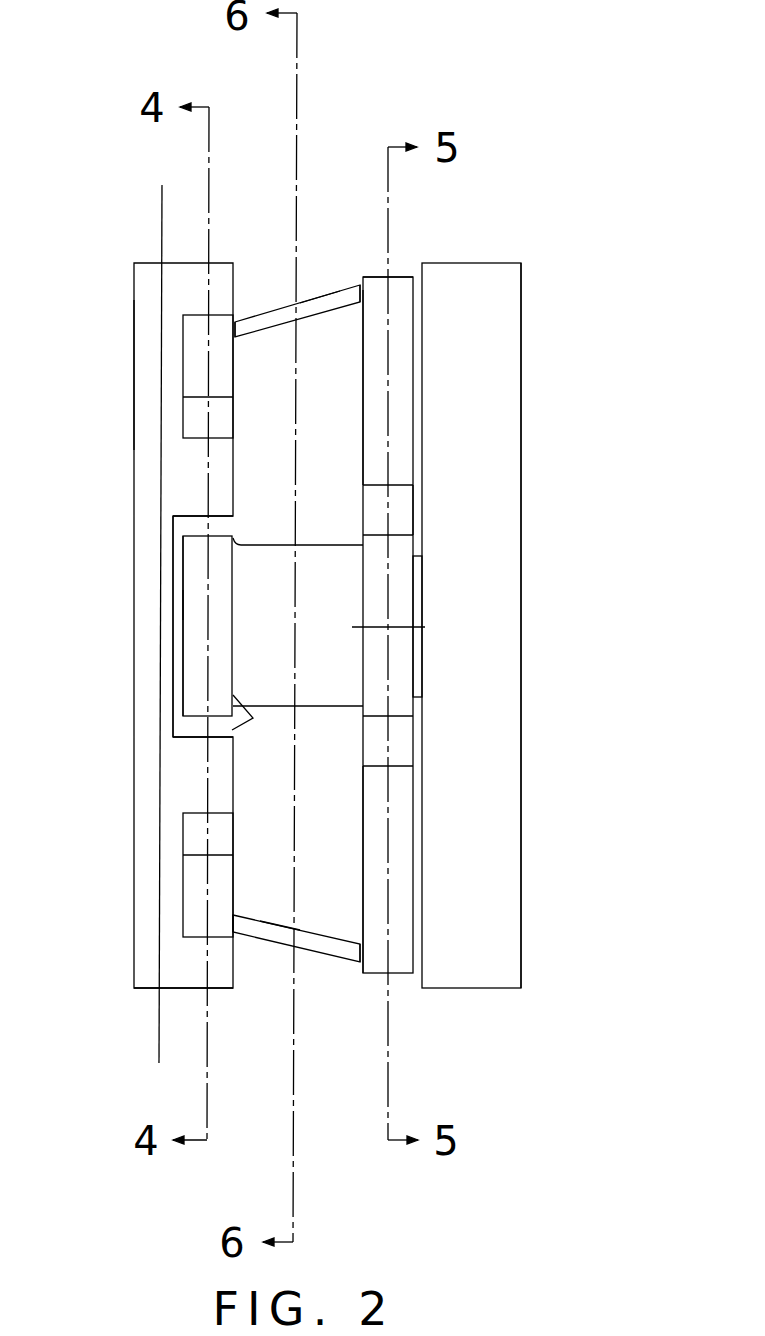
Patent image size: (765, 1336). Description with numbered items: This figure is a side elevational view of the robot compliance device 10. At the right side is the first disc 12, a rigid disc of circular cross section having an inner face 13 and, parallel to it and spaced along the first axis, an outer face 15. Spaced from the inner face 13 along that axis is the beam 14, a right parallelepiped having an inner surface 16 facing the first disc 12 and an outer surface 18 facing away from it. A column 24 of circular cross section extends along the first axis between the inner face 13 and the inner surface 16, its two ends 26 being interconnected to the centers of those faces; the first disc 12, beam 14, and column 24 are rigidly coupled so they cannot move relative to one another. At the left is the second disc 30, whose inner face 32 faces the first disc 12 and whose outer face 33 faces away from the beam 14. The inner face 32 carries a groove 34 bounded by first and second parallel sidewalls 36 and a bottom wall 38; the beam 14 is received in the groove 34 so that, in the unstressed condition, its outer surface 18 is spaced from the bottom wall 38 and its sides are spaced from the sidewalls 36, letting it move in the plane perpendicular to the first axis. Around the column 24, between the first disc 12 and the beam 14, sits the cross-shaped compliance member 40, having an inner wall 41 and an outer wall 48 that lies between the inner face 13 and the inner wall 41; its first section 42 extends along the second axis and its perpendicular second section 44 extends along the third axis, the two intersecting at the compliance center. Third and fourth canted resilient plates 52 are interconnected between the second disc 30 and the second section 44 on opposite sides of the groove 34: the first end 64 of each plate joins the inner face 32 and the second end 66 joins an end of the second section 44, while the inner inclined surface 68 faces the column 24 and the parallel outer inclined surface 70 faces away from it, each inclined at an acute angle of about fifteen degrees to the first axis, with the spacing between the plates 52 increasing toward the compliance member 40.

The robot compliance device 10 is at (514, 116).
The first disc 12 is at (497, 747).
The inner face 13 is at (408, 229).
The beam 14 is at (195, 642).
The outer face 15 is at (521, 365).
The inner surface 16 is at (232, 730).
The outer surface 18 is at (182, 568).
The column 24 is at (330, 693).
The ends 26 is at (257, 560).
The second disc 30 is at (150, 332).
The inner face 32 is at (230, 963).
The outer face 33 is at (133, 377).
The groove 34 is at (170, 684).
The sidewalls 36 is at (185, 513).
The bottom wall 38 is at (180, 608).
The compliance member 40 is at (398, 823).
The inner wall 41 is at (362, 367).
The first section 42 is at (400, 655).
The second section 44 is at (400, 358).
The outer wall 48 is at (412, 448).
The third and fourth canted resilient plates 52 is at (277, 317).
The first end 64 is at (248, 328).
The second end 66 is at (362, 283).
The inner inclined surface 68 is at (330, 311).
The outer inclined surface 70 is at (315, 299).